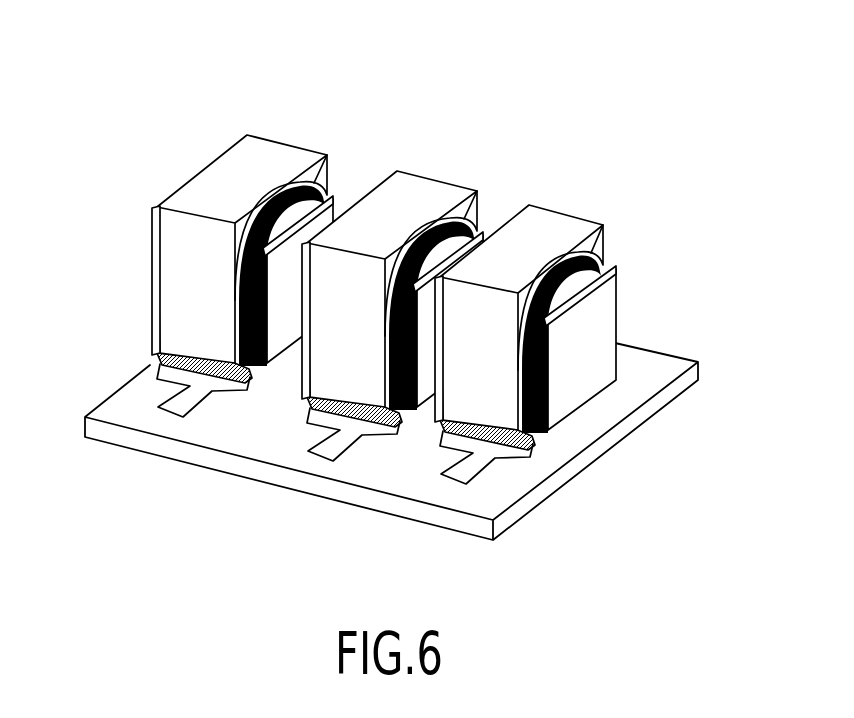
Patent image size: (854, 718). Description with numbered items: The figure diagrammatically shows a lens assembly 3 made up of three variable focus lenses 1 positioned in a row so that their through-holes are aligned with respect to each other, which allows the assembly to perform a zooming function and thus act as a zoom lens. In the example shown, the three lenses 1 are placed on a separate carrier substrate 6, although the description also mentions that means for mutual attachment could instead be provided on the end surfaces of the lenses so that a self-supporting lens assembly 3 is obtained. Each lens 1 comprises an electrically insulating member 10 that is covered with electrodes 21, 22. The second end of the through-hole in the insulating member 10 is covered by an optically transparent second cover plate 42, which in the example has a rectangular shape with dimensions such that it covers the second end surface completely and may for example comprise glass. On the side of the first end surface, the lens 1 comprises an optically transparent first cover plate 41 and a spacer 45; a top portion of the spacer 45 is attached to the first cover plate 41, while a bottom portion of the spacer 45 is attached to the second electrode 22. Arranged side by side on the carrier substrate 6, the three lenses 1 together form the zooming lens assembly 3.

The variable focus lens 1 is at (394, 306).
The lens assembly 3 is at (394, 306).
The carrier substrate 6 is at (573, 465).
The electrically insulating member 10 is at (192, 255).
The first electrode 21 is at (495, 445).
The second electrode 22 is at (568, 262).
The first cover plate 41 is at (590, 362).
The second cover plate 42 is at (150, 311).
The spacer 45 is at (602, 273).